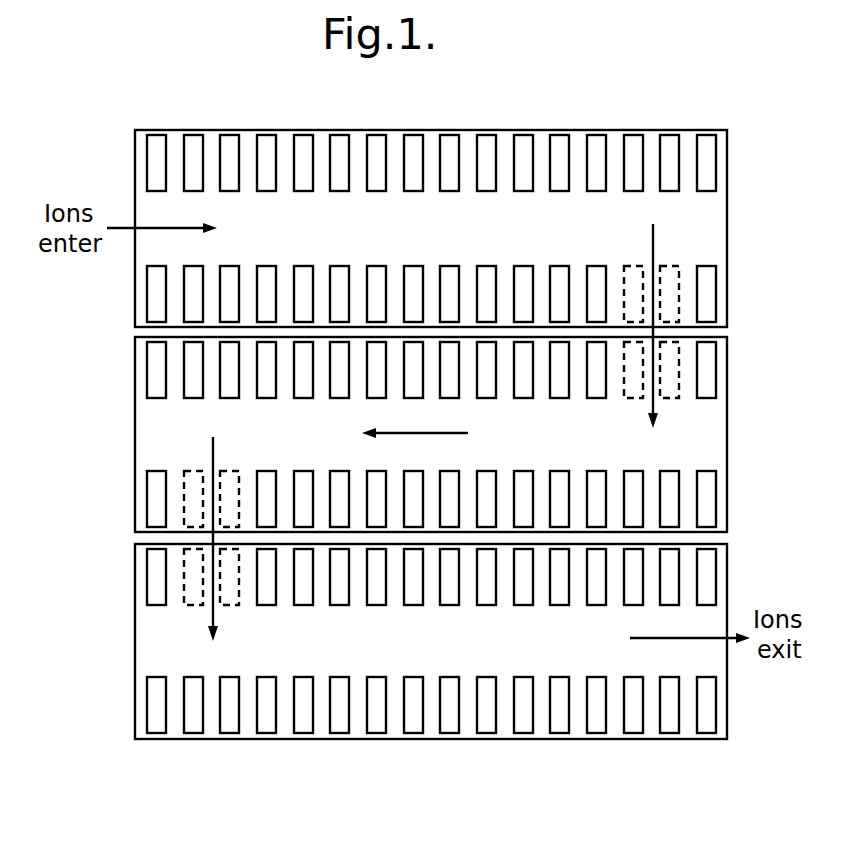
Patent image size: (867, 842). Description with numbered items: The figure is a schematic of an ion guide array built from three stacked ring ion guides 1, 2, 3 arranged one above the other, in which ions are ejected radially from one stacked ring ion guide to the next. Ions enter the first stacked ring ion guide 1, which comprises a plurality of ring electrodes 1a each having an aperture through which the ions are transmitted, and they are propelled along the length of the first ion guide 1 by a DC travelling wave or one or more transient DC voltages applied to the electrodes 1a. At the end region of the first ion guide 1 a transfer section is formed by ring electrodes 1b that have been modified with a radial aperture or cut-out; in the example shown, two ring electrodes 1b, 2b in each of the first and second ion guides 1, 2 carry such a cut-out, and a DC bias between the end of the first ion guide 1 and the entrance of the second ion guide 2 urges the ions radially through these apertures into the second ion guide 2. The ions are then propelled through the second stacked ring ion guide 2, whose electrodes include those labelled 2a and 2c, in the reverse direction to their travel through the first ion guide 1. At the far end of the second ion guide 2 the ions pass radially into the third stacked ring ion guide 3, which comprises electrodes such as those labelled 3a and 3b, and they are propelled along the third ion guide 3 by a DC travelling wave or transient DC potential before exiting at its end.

The first stacked ring ion guide 1 is at (727, 222).
The ring electrodes 1a is at (303, 143).
The modified ring electrodes 1b is at (670, 143).
The second stacked ring ion guide 2 is at (727, 427).
The electrode of second section 2a is at (303, 388).
The modified ring electrodes 2b is at (672, 508).
The electrode of second section 2c is at (192, 388).
The third stacked ring ion guide 3 is at (135, 640).
The electrode of third section 3a is at (303, 725).
The electrode of third section 3b is at (193, 725).